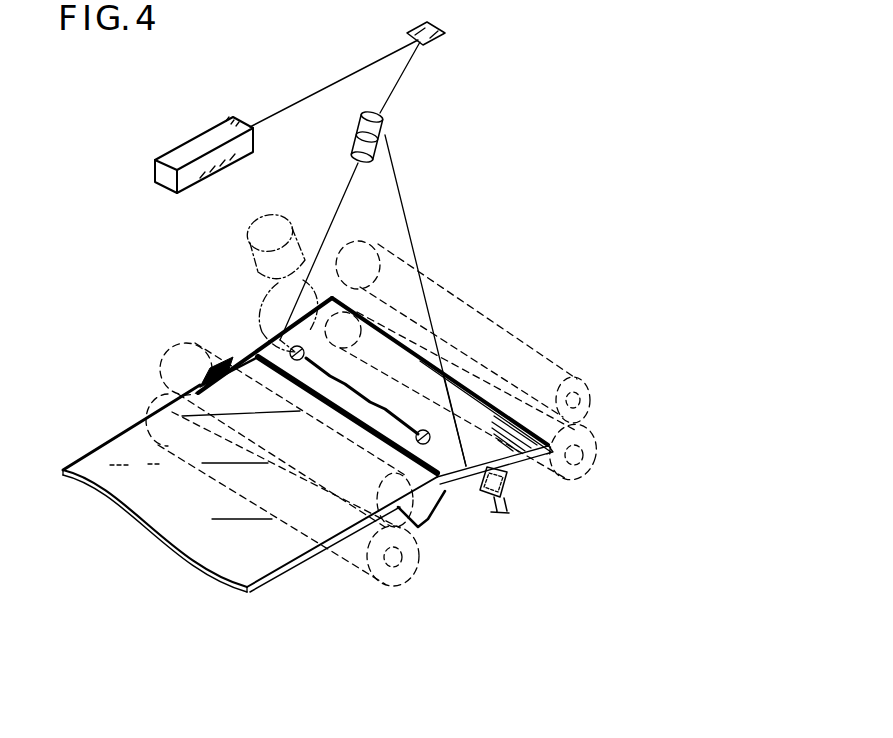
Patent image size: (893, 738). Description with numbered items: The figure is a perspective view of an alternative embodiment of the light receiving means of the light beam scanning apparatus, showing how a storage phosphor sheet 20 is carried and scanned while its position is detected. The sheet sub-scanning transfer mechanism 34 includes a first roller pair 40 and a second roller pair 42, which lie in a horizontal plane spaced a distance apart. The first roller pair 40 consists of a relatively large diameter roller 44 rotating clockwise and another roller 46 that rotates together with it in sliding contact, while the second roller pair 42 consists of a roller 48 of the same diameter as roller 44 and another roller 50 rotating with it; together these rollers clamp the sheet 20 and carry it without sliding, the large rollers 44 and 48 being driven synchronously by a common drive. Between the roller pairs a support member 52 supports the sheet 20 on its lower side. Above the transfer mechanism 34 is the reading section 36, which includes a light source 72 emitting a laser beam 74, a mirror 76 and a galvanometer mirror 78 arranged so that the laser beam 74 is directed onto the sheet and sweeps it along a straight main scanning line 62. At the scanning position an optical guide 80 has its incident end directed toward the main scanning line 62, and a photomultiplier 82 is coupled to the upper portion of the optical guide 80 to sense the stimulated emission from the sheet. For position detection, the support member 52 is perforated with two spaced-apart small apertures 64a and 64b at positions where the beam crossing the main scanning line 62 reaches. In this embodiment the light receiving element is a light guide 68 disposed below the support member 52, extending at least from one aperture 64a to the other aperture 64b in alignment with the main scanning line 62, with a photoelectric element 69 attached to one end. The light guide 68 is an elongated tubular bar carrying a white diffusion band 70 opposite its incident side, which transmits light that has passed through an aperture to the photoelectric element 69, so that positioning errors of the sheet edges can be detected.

The storage phosphor sheet 20 is at (148, 420).
The sheet sub-scanning transfer mechanism 34 is at (523, 553).
The reading section 36 is at (263, 87).
The first roller pair 40 is at (234, 429).
The second roller pair 42 is at (511, 363).
The roller 44 is at (165, 393).
The roller 46 is at (175, 352).
The roller 48 is at (595, 443).
The roller 50 is at (588, 380).
The support member 52 is at (520, 442).
The main scanning line 62 is at (451, 312).
The aperture 64a is at (428, 432).
The aperture 64b is at (303, 350).
The light guide 68 is at (465, 468).
The photoelectric element 69 is at (503, 482).
The white diffusion band 70 is at (526, 540).
The light source 72 is at (253, 152).
The laser beam 74 is at (340, 80).
The mirror 76 is at (447, 36).
The galvanometer mirror 78 is at (384, 118).
The optical guide 80 is at (281, 298).
The photomultiplier 82 is at (253, 230).